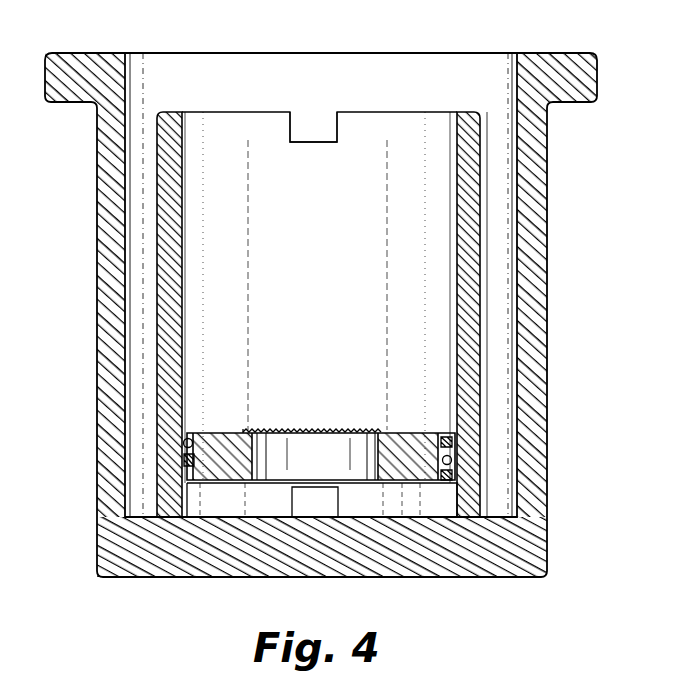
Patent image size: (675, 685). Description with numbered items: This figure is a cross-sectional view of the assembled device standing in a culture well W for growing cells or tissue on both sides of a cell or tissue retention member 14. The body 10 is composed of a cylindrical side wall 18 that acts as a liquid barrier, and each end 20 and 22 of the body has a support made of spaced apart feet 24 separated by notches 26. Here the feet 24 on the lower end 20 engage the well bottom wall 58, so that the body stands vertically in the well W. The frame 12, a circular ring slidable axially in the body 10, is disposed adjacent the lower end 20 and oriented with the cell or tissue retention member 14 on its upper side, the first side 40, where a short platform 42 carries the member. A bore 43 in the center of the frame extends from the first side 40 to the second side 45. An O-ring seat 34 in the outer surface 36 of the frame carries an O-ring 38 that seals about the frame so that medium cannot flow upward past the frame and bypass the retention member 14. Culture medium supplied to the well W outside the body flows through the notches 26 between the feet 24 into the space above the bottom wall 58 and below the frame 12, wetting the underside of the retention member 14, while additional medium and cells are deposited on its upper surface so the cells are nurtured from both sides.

The body 10 is at (450, 112).
The frame 12 is at (439, 434).
The cell or tissue retention member 14 is at (303, 430).
The cylindrical side wall 18 is at (481, 204).
The end of the body 20 is at (480, 523).
The end of the body 22 is at (467, 113).
The feet 24 is at (220, 112).
The notches 26 is at (313, 142).
The O-ring seat 34 is at (456, 478).
The outer surface of the frame 36 is at (458, 443).
The O-ring 38 is at (454, 460).
The first side of the frame 40 is at (393, 432).
The short platform 42 is at (242, 432).
The bore 43 is at (333, 445).
The second side of the frame 45 is at (400, 519).
The bottom wall of well 58 is at (268, 578).
The culture well W is at (547, 239).